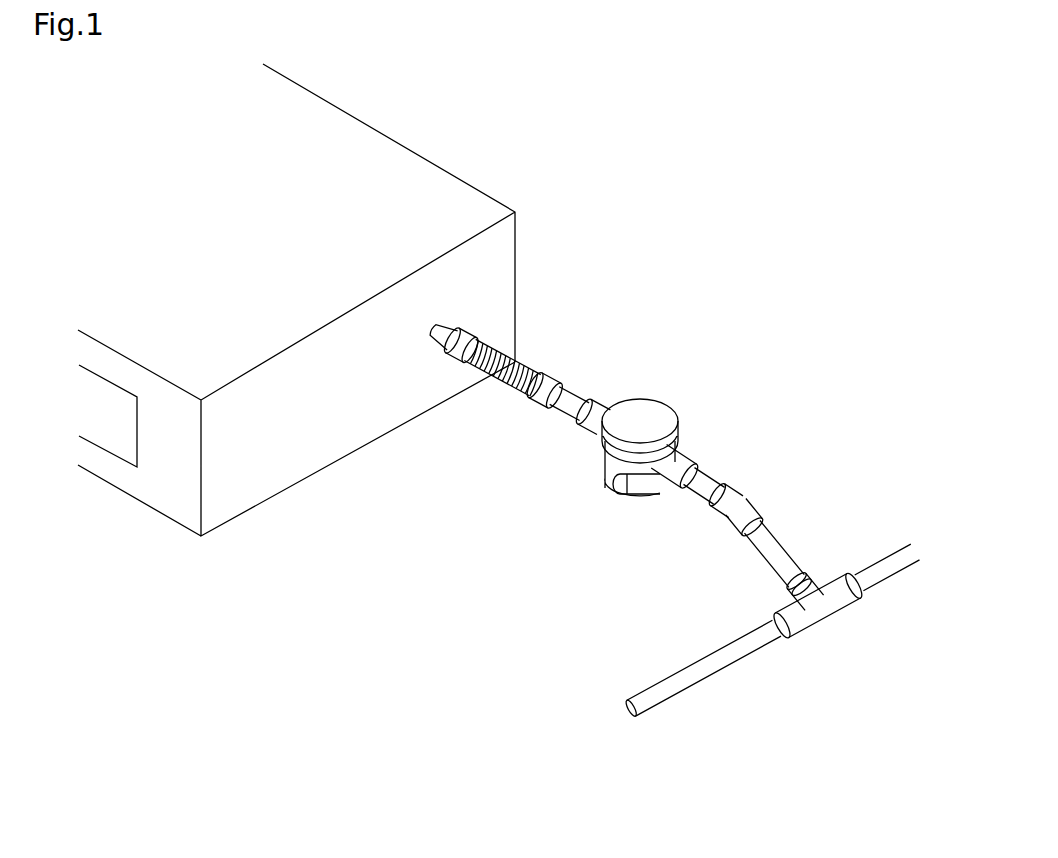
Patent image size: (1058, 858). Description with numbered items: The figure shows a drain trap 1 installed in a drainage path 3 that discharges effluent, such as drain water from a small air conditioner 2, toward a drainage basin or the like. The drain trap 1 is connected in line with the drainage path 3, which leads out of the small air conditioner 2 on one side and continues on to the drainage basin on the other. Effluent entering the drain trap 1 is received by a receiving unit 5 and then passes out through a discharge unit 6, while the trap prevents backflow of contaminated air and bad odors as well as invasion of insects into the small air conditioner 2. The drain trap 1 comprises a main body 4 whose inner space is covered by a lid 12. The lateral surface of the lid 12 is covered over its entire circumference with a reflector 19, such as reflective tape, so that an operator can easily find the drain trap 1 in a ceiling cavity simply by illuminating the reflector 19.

The drain trap 1 is at (627, 413).
The small air conditioner 2 is at (433, 178).
The drainage path 3 is at (577, 395).
The main body 4 is at (607, 490).
The receiving unit 5 is at (592, 426).
The discharge unit 6 is at (668, 478).
The lid 12 is at (657, 410).
The reflector 19 is at (607, 458).